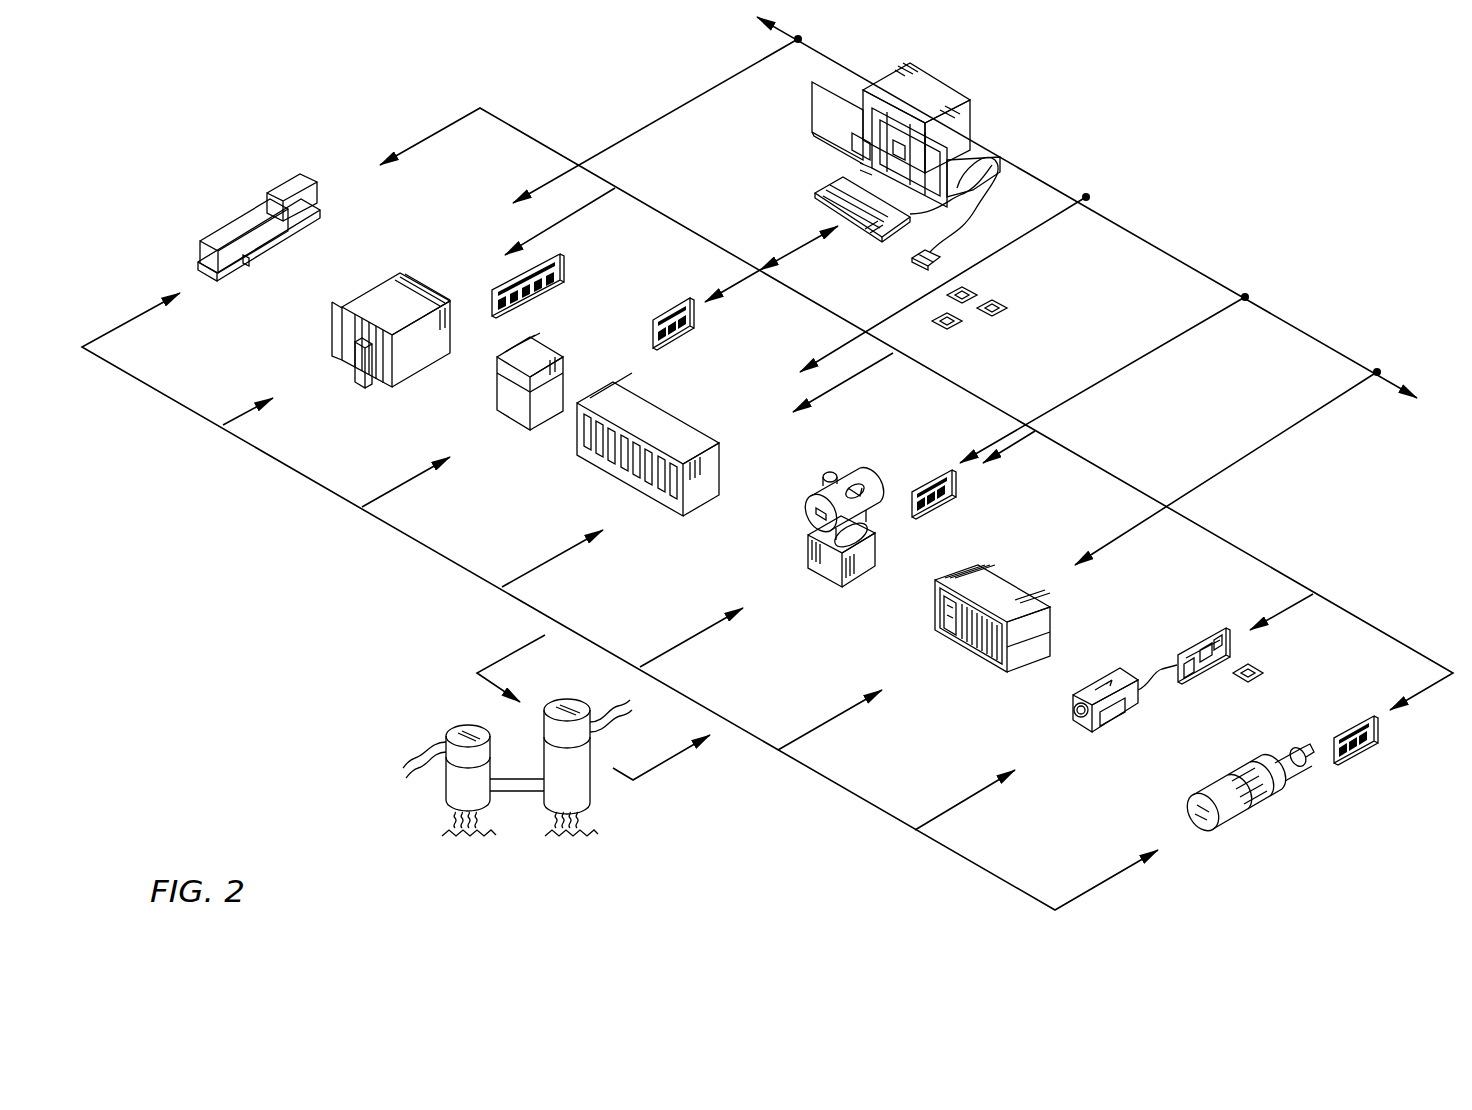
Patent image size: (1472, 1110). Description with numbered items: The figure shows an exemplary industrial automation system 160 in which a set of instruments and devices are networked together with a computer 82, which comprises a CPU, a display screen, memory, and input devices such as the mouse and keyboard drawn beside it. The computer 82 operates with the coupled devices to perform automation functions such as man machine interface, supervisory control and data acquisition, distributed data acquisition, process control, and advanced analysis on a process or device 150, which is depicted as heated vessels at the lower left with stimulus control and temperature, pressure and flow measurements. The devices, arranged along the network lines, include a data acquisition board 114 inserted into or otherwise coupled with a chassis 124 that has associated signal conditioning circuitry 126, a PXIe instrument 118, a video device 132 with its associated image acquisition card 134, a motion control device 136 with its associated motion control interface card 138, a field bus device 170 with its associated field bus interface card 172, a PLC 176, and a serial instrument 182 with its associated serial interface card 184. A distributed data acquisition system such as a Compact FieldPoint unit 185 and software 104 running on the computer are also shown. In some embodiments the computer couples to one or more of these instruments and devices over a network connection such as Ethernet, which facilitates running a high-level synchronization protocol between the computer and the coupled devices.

The computer 82 is at (937, 83).
The software 104 is at (973, 322).
The data acquisition board 114 is at (533, 292).
The PXIe instrument 118 is at (970, 647).
The chassis 124 is at (331, 338).
The signal conditioning circuitry 126 is at (362, 360).
The video device 132 is at (1103, 728).
The image acquisition card 134 is at (1190, 640).
The motion control device 136 is at (1240, 813).
The motion control interface card 138 is at (1357, 750).
The process or device 150 is at (418, 748).
The industrial automation system 160 is at (1270, 173).
The field bus device 170 is at (825, 573).
The field bus interface card 172 is at (937, 500).
The PLC 176 is at (665, 415).
The serial instrument 182 is at (513, 413).
The serial interface card 184 is at (670, 313).
The FieldPoint distributed I/O system 185 is at (277, 183).